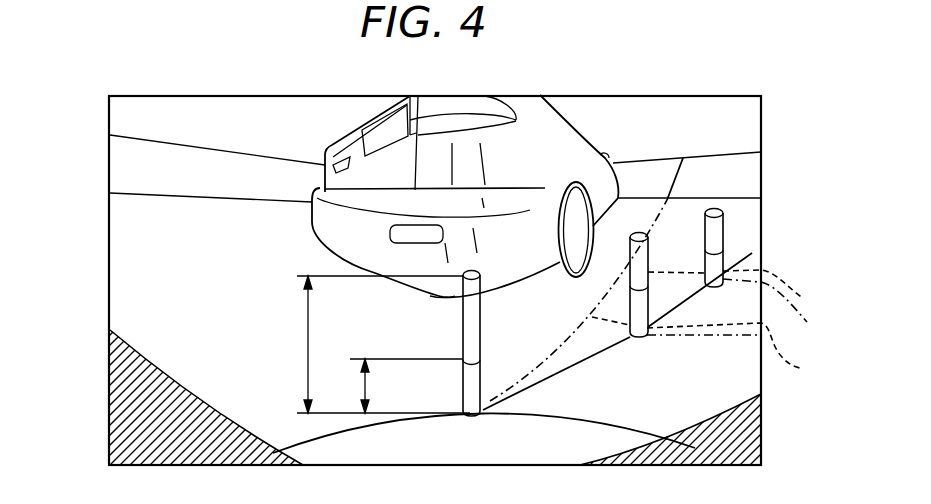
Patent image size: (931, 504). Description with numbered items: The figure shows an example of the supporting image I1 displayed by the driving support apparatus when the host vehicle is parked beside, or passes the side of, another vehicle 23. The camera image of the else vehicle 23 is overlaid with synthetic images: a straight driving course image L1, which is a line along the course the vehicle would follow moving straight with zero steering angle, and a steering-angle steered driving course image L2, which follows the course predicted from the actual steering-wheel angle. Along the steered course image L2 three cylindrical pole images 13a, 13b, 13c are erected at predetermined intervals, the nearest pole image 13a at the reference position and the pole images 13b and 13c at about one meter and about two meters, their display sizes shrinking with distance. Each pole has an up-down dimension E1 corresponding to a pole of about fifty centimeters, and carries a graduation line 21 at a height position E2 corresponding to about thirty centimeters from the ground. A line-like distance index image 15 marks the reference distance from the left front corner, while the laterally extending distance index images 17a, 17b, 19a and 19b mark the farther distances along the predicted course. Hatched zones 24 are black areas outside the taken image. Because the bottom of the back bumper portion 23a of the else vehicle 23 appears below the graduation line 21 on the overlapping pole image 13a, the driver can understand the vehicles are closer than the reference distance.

The supporting image I1 is at (85, 102).
The pole image 13a is at (482, 322).
The pole image 13b is at (648, 254).
The pole image 13c is at (723, 233).
The distance index image 15 is at (609, 426).
The distance index image 17a is at (730, 338).
The distance index image 17b is at (784, 313).
The distance index image 19a is at (720, 350).
The distance index image 19b is at (749, 291).
The graduation line 21 is at (482, 368).
The else vehicle 23 is at (303, 222).
The back bumper portion 23a is at (437, 298).
The black zone 24 is at (122, 435).
The straight driving course image L1 is at (671, 182).
The steering-angle steered driving course image L2 is at (752, 256).
The up-down dimension E1 is at (372, 344).
The height position E2 is at (395, 386).